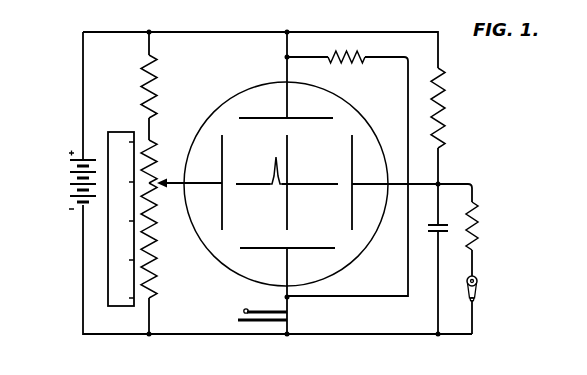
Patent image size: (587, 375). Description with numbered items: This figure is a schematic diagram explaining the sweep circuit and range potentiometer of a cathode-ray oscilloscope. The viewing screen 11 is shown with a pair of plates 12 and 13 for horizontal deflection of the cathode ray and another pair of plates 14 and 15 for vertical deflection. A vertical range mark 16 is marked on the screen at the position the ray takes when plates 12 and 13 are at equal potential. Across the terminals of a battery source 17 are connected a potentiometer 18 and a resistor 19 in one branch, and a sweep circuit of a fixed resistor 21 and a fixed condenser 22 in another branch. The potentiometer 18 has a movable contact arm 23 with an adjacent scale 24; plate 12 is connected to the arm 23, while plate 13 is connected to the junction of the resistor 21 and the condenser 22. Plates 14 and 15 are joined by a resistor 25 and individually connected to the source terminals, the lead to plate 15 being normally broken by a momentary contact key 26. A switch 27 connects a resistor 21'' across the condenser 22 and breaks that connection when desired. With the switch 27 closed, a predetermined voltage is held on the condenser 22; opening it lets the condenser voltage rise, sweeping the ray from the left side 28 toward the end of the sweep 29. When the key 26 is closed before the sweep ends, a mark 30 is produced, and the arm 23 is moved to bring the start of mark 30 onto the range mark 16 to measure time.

The viewing screen 11 is at (253, 84).
The plate 12 is at (222, 203).
The plate 13 is at (352, 142).
The plate 14 is at (248, 118).
The plate 15 is at (311, 248).
The range mark 16 is at (288, 163).
The source of electromotive force 17 is at (70, 185).
The potentiometer 18 is at (157, 272).
The resistor 19 is at (157, 90).
The resistor 21 is at (456, 108).
The resistor 21'' is at (493, 226).
The condenser 22 is at (448, 227).
The movable contact arm 23 is at (161, 181).
The scale 24 is at (115, 132).
The resistor 25 is at (356, 52).
The momentary contact key 26 is at (243, 313).
The switch 27 is at (480, 284).
The left side of screen 28 is at (255, 186).
The end of sweep 29 is at (323, 186).
The mark 30 is at (272, 167).